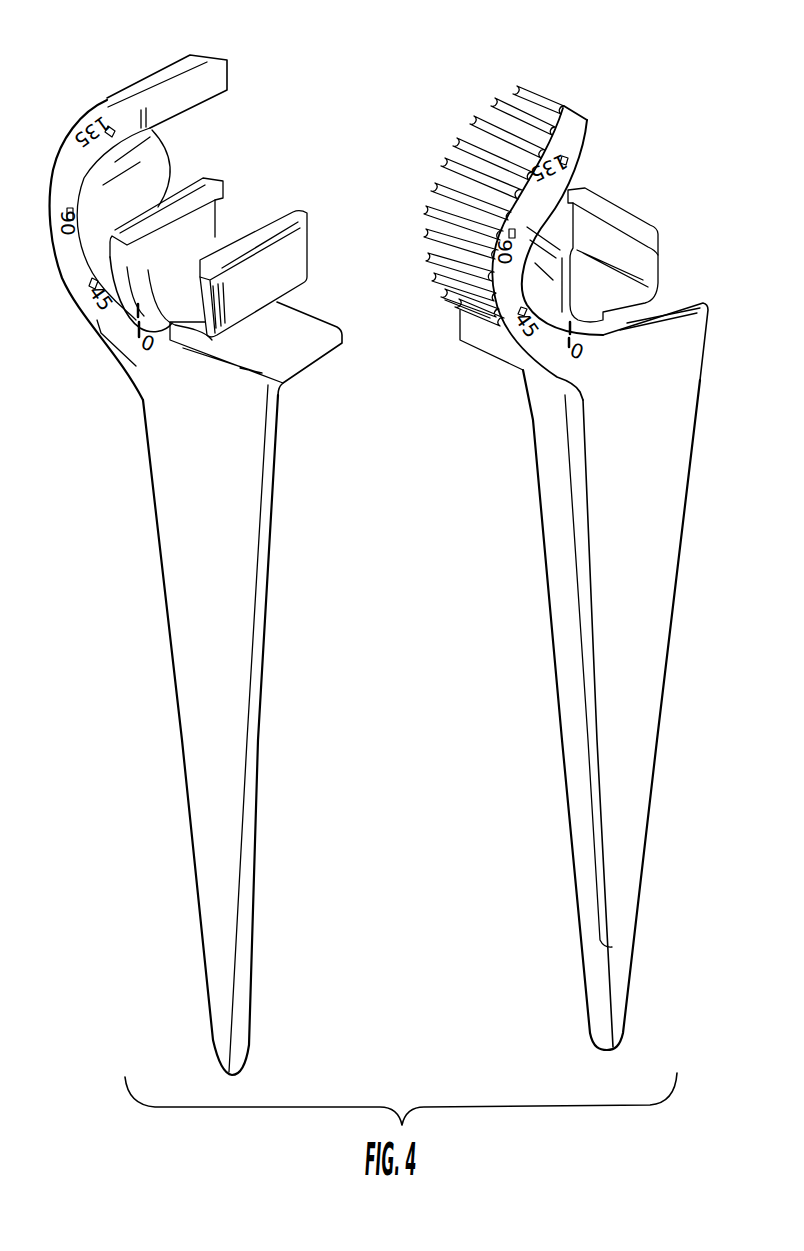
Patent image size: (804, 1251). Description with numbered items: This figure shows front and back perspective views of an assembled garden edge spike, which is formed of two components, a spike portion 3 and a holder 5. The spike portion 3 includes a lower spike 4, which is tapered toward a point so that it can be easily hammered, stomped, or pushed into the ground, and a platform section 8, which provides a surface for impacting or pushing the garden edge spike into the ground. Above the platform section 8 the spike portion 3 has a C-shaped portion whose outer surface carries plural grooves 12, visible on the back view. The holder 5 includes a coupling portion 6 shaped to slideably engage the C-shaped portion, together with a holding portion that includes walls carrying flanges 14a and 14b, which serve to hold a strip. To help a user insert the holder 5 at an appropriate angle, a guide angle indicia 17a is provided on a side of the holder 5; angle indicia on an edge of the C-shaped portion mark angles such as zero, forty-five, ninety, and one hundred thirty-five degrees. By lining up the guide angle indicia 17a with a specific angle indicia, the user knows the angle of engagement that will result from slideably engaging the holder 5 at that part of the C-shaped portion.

The spike portion 3 is at (267, 602).
The lower spike 4 is at (233, 853).
The holder 5 is at (637, 209).
The coupling portion 6 is at (111, 343).
The platform section 8 is at (304, 333).
The grooves 12 is at (498, 98).
The flange 14a is at (293, 212).
The flange 14b is at (215, 177).
The guide angle indicia 17a is at (132, 320).